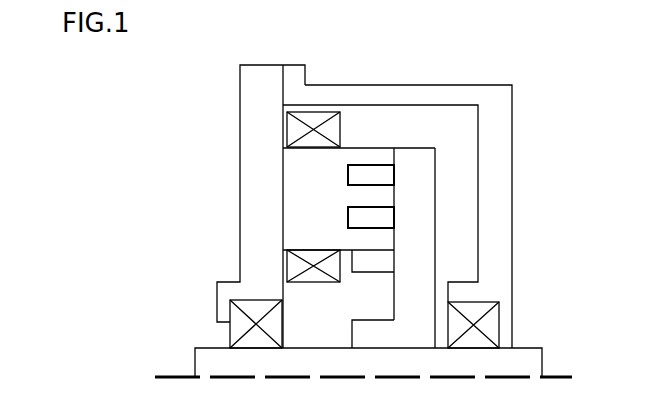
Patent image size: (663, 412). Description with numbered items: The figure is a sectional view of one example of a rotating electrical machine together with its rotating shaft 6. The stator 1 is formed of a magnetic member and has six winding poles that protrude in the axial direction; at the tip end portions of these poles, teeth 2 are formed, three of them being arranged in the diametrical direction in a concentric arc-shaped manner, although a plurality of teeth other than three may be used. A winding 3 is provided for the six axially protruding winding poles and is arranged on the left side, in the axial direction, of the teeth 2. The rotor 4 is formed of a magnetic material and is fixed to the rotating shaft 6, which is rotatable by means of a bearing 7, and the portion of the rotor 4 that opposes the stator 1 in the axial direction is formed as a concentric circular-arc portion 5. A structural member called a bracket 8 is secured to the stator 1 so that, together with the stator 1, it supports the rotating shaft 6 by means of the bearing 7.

The stator 1 is at (262, 199).
The teeth 2 is at (375, 157).
The winding 3 is at (342, 128).
The rotor 4 is at (415, 203).
The concentric circular-arc portion 5 is at (377, 262).
The rotating shaft 6 is at (528, 366).
The bearing 7 is at (242, 330).
The bracket 8 is at (503, 113).